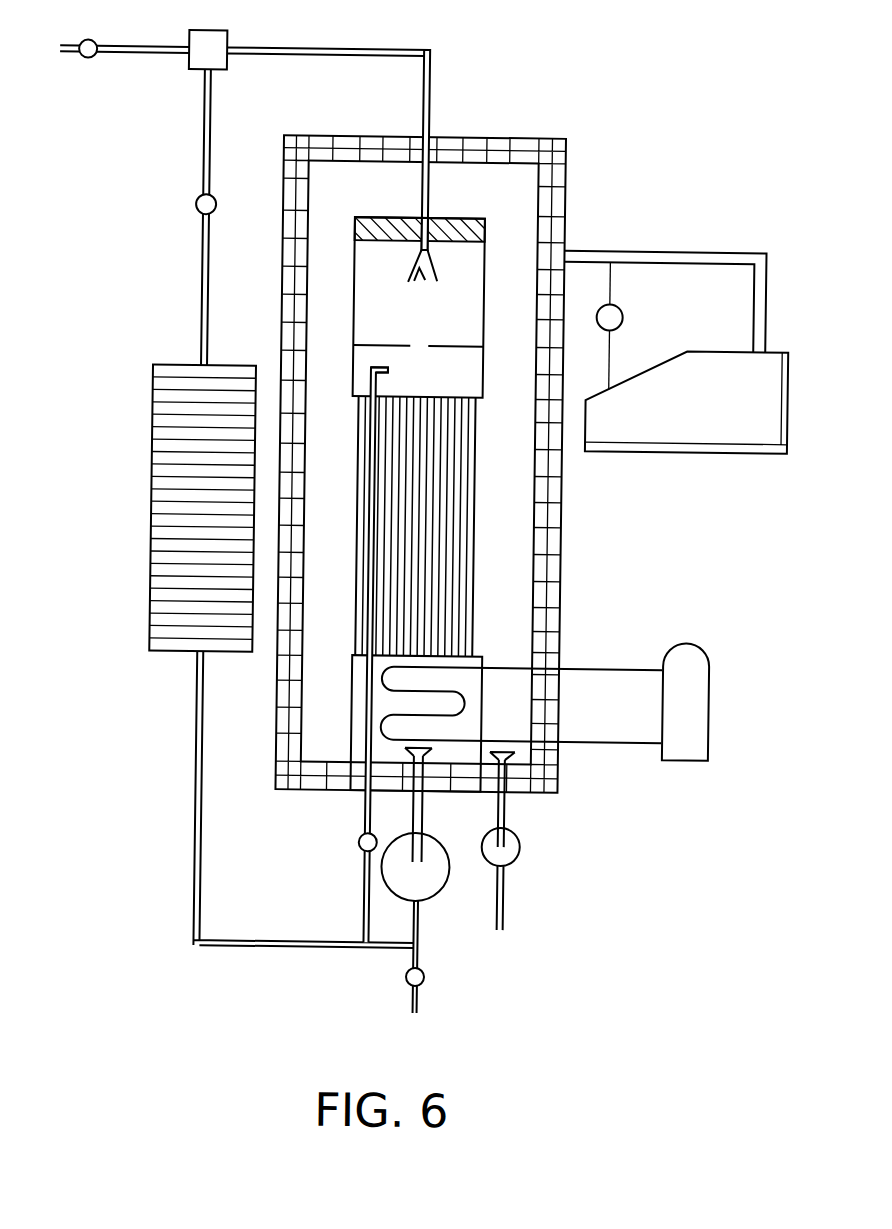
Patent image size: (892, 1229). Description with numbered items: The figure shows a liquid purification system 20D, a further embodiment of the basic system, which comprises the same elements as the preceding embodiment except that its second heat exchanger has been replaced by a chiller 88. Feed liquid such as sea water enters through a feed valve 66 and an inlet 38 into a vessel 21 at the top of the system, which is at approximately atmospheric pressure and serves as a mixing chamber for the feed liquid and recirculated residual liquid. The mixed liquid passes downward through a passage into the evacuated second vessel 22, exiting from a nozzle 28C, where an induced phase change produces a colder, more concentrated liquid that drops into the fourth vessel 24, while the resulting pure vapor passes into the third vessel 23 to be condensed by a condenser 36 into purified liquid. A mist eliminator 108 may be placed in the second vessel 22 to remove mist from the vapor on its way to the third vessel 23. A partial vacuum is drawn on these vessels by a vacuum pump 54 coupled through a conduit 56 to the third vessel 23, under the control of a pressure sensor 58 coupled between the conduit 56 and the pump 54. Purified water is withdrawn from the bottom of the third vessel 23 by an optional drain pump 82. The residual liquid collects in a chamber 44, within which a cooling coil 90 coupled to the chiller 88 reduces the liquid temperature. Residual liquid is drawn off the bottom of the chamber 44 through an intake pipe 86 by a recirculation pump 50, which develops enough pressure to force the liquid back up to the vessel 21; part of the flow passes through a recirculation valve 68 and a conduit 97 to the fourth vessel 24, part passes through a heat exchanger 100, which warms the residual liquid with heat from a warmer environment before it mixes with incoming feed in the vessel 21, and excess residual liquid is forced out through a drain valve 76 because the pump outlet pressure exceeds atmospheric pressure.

The system 20D is at (353, 971).
The vessel 21 is at (198, 45).
The second vessel 22 is at (409, 292).
The third vessel 23 is at (295, 465).
The fourth vessel 24 is at (481, 359).
The nozzle 28C is at (416, 278).
The condenser 36 is at (474, 554).
The inlet 38 is at (107, 56).
The chamber 44 is at (487, 698).
The recirculation pump 50 is at (436, 880).
The vacuum pump 54 is at (672, 366).
The conduit 56 is at (643, 249).
The pressure sensor 58 is at (611, 302).
The feed valve 66 is at (83, 44).
The recirculation valve 68 is at (363, 844).
The drain valve 76 is at (430, 976).
The drain pump 82 is at (514, 847).
The intake pipe 86 is at (428, 758).
The chiller 88 is at (696, 709).
The cooling coil 90 is at (386, 682).
The conduit 97 is at (379, 374).
The heat exchanger 100 is at (183, 373).
The mist eliminator 108 is at (440, 223).